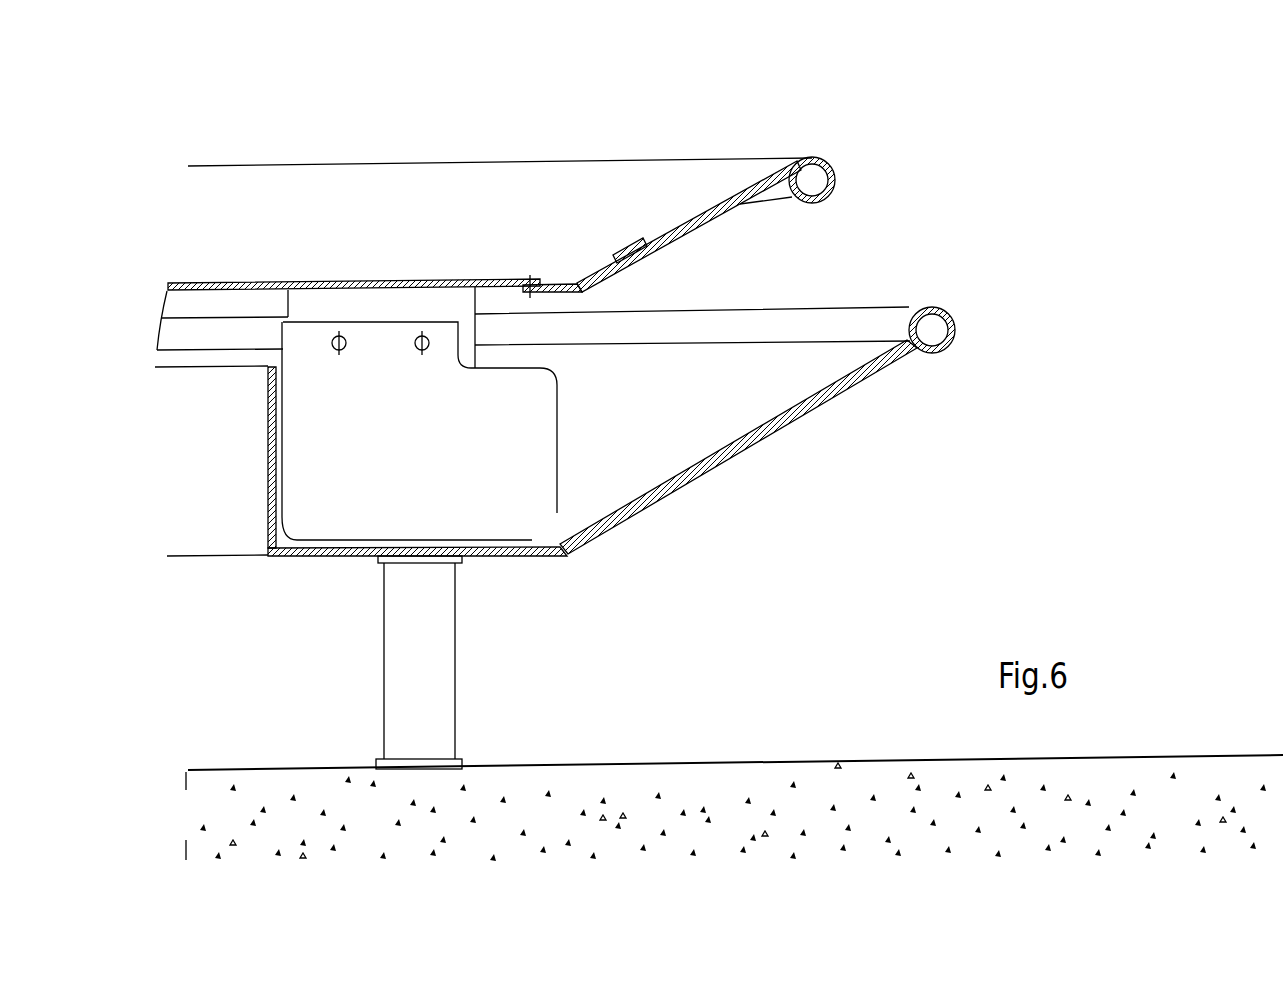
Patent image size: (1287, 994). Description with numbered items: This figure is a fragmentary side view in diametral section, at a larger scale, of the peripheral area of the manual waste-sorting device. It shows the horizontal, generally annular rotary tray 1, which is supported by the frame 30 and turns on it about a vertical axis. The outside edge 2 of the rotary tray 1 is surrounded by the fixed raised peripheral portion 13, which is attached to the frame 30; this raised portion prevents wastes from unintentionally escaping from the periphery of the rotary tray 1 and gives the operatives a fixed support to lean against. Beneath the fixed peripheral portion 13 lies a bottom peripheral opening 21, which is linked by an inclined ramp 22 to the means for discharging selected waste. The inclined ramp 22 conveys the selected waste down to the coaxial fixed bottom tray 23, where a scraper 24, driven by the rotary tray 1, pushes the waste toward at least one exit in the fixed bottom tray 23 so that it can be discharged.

The rotary tray 1 is at (345, 282).
The outside edge 2 is at (530, 290).
The fixed raised peripheral portion 13 is at (672, 240).
The bottom peripheral opening 21 is at (895, 230).
The inclined ramp 22 is at (660, 495).
The fixed bottom tray 23 is at (490, 557).
The scraper 24 is at (348, 502).
The frame 30 is at (398, 737).